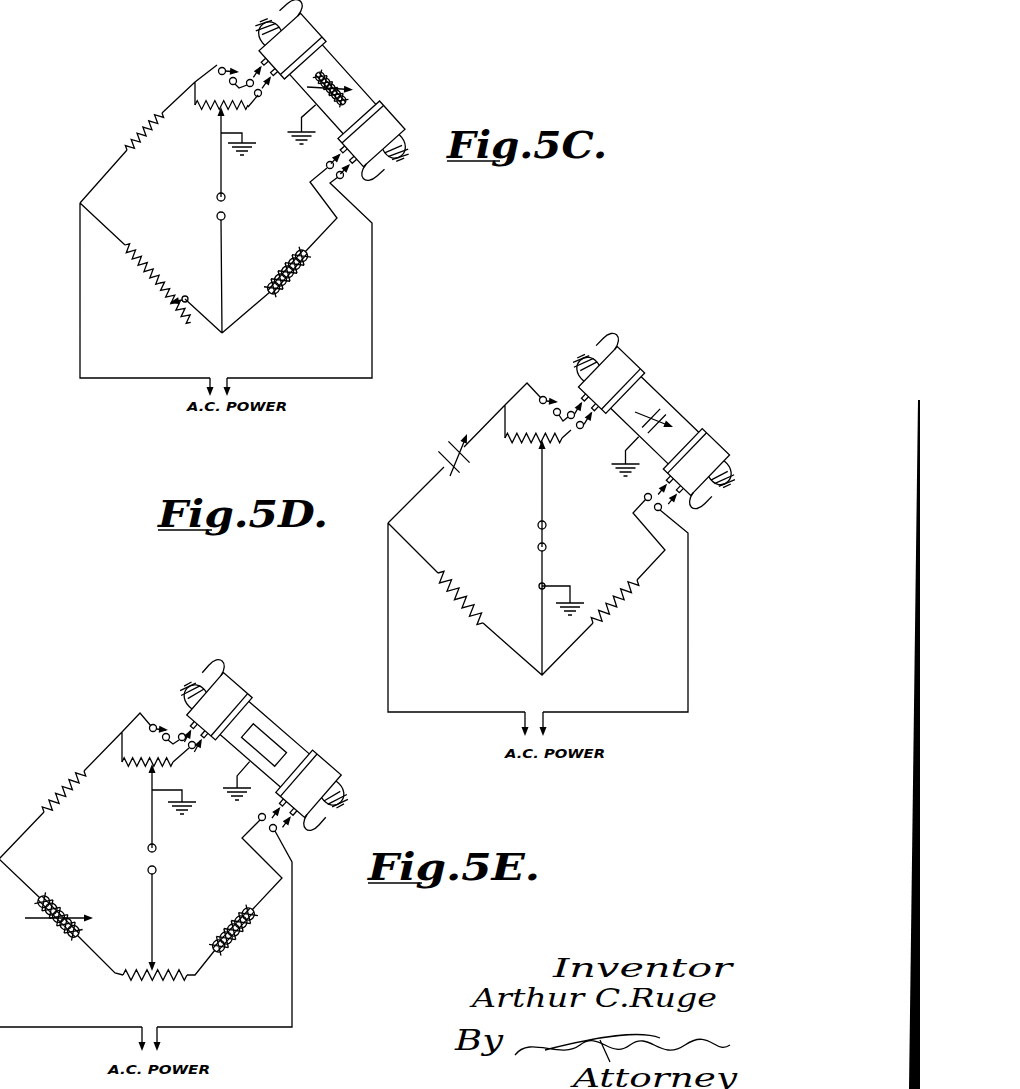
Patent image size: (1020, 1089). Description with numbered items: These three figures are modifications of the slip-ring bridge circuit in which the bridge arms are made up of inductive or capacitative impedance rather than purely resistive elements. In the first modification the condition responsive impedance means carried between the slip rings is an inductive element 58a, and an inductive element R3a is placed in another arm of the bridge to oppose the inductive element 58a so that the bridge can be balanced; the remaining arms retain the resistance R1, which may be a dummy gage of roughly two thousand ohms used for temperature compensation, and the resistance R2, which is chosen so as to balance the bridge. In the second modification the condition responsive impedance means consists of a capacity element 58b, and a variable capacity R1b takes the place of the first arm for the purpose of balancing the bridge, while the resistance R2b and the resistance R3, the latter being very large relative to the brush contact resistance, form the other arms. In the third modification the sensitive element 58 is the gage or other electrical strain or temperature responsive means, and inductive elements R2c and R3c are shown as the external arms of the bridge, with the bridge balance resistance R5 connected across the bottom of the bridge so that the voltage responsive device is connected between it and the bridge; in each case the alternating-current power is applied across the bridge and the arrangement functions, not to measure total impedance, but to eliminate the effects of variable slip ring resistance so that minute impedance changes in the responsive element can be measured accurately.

In FIG. 5C, the resistance R1 is at (141, 131).
In FIG. 5E, the resistance R1 is at (64, 791).
In FIG. 5C, the resistance R2 is at (158, 282).
In FIG. 5C, the inductive element R3a is at (294, 272).
In FIG. 5C, the inductive element 58a is at (337, 78).
In FIG. 5D, the variable capacity R1b is at (438, 451).
In FIG. 5D, the resistance R2b is at (467, 597).
In FIG. 5D, the resistance R3 is at (616, 601).
In FIG. 5D, the capacity element 58b is at (650, 404).
In FIG. 5E, the inductive element R2c is at (61, 915).
In FIG. 5E, the inductive element R3c is at (240, 930).
In FIG. 5E, the bridge balance resistance R5 is at (155, 964).
In FIG. 5E, the electrical strain or temperature responsive means 58 is at (264, 741).